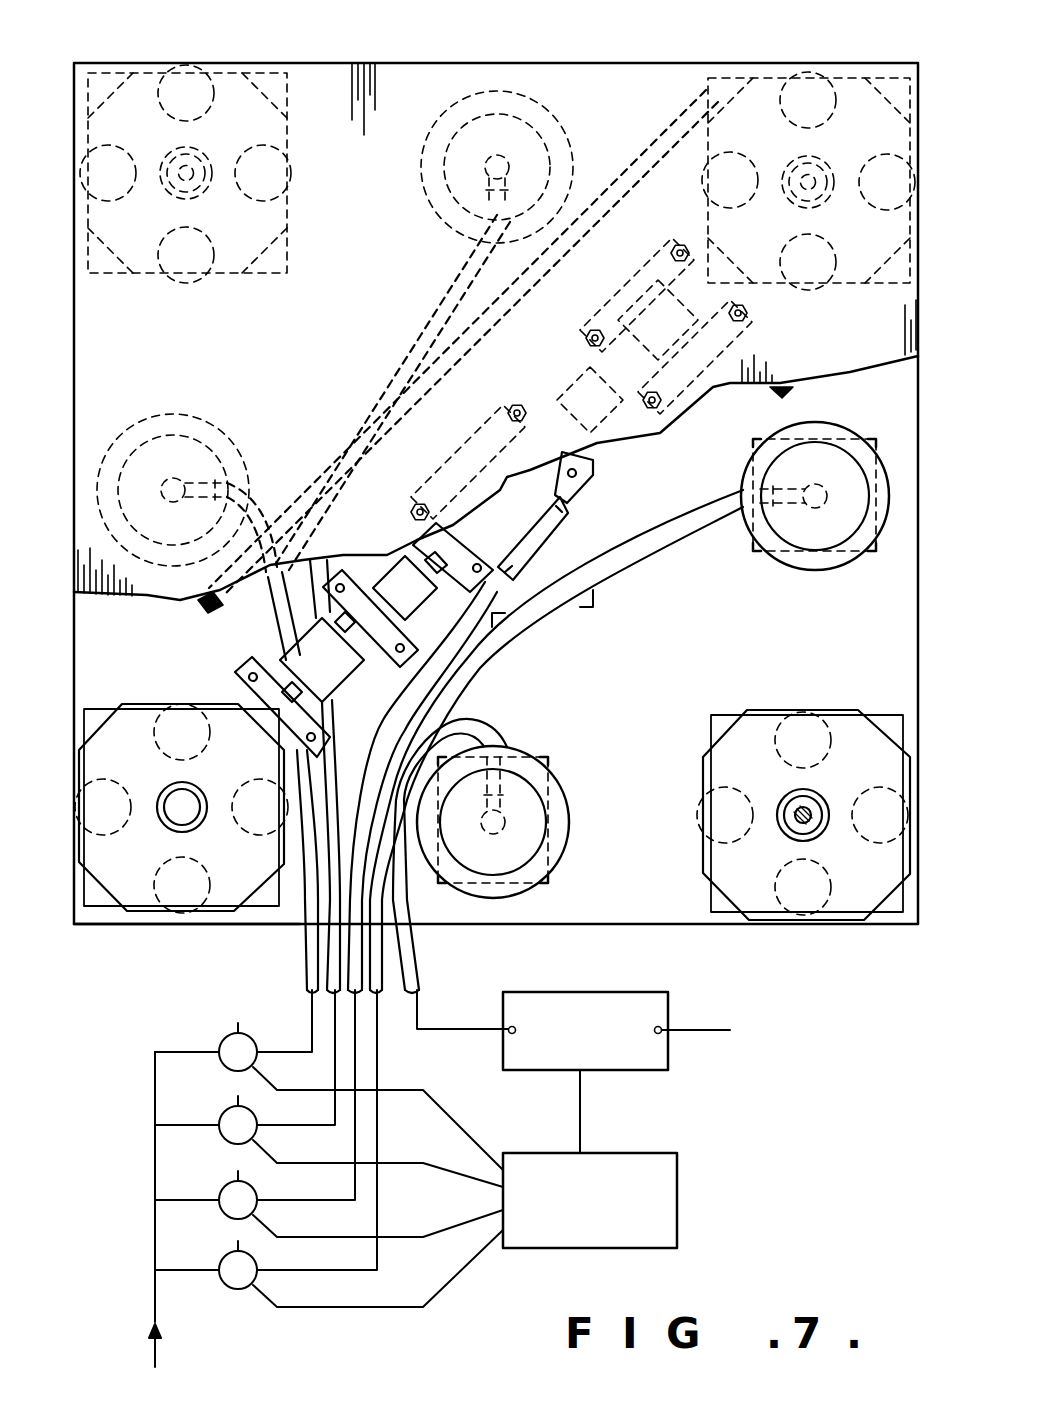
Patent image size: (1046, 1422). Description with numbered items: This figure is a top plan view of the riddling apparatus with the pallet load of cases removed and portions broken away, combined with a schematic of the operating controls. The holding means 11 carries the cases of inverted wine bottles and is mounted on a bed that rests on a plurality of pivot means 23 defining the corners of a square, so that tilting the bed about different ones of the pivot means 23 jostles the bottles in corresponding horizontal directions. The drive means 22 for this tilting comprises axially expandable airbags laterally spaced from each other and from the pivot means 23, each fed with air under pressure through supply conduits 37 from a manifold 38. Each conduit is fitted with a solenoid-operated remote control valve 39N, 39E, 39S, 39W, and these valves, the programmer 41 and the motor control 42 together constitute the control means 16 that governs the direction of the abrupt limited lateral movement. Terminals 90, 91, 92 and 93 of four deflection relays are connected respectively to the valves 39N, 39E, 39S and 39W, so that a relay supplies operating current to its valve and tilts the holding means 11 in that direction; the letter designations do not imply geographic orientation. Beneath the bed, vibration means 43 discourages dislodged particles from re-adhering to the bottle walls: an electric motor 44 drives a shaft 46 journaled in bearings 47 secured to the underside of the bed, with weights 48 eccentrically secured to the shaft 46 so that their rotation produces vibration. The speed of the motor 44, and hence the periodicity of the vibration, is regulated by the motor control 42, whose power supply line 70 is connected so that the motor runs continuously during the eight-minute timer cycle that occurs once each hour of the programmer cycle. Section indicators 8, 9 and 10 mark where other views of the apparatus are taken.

The holding means 11 is at (326, 55).
The supply conduits 37 is at (435, 322).
The bearings 47 is at (657, 260).
The weights 48 is at (658, 358).
The shaft 46 is at (557, 427).
The section view indicator 10 is at (757, 278).
The vibration means 43 is at (605, 479).
The electric motor 44 is at (570, 498).
The pivot means 23 is at (132, 695).
The drive means 22 is at (168, 951).
The manifold 38 is at (153, 1297).
The solenoid-operated air control valve 39N is at (236, 1033).
The solenoid-operated air control valve 39E is at (236, 1106).
The solenoid-operated air control valve 39S is at (235, 1181).
The solenoid-operated air control valve 39W is at (235, 1251).
The NC terminal 90 is at (437, 1100).
The NC terminal 91 is at (418, 1163).
The NC terminal 92 is at (402, 1233).
The NC terminal 93 is at (440, 1284).
The power supply line 70 is at (580, 1107).
The motor control 42 is at (643, 1072).
The programmer 41 is at (643, 1250).
The control means 16 is at (449, 1178).
The section line 8 is at (424, 280).
The section line 9 is at (702, 55).